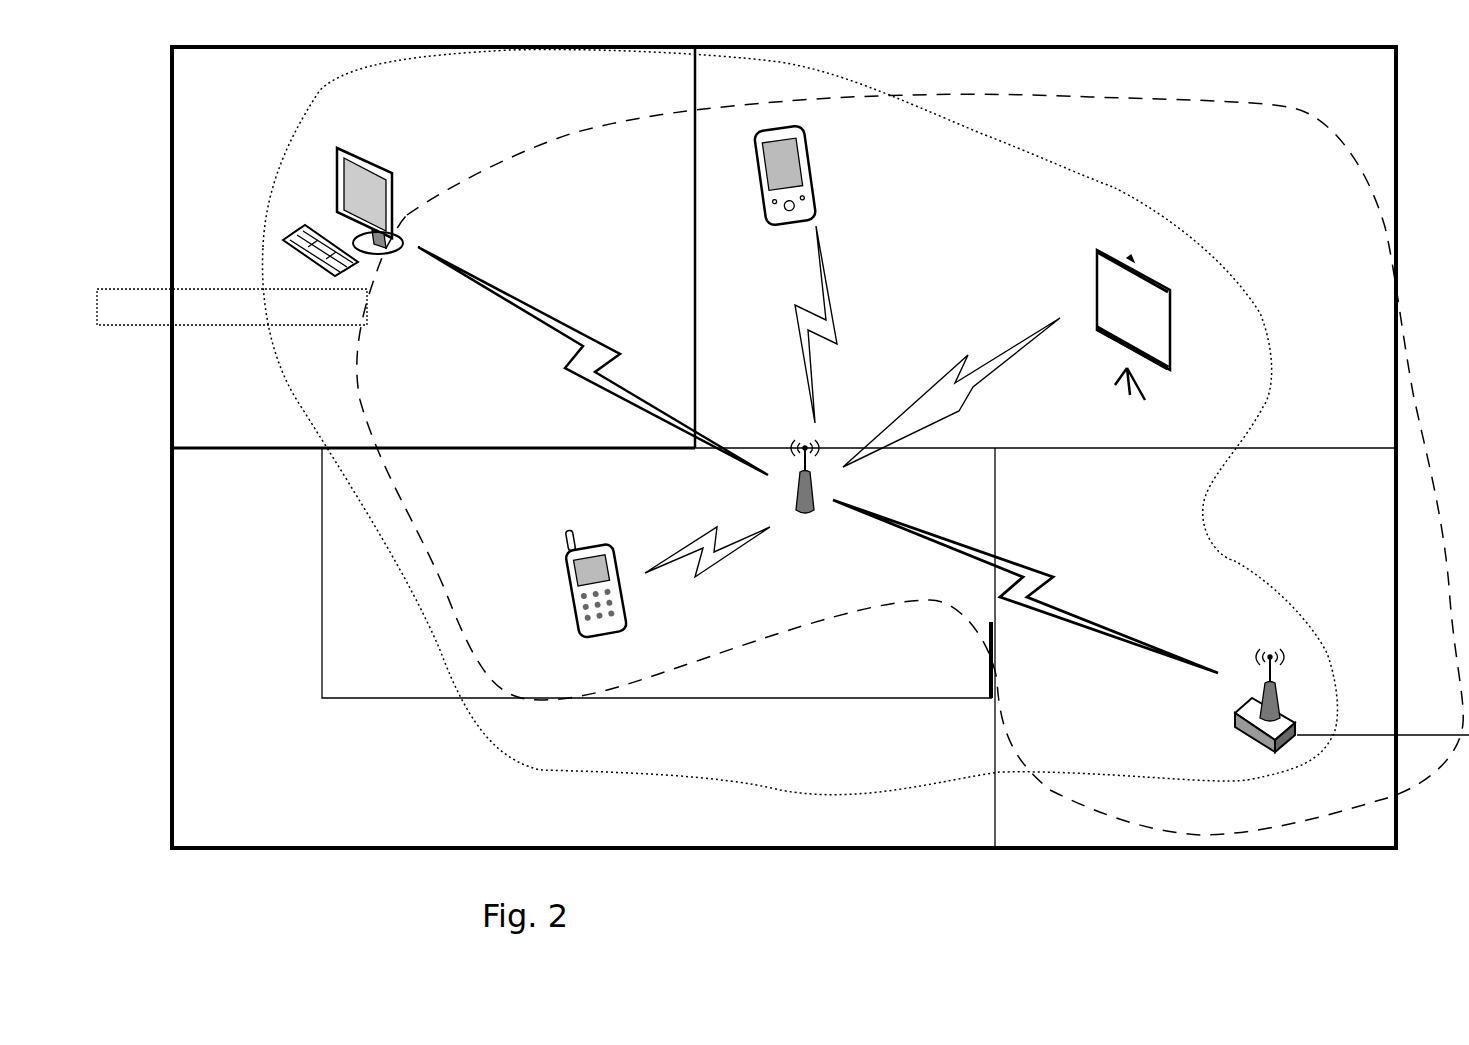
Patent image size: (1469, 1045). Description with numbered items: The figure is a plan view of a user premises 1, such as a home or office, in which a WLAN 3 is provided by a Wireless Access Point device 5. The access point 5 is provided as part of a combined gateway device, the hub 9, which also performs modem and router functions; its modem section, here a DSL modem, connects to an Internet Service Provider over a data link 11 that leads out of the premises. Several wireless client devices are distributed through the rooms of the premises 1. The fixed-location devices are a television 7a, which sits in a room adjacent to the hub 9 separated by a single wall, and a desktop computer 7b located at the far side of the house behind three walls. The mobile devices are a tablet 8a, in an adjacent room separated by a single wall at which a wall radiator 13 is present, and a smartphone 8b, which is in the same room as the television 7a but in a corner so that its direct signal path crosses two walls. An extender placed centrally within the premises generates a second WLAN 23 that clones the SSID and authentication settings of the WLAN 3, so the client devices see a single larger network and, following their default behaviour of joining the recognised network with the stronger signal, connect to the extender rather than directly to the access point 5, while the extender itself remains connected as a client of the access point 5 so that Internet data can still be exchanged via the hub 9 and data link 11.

The user premises 1 is at (1398, 137).
The WLAN 3 is at (1310, 112).
The Wireless Access Point device 5 is at (1282, 702).
The television 7a is at (1170, 290).
The desktop computer 7b is at (402, 210).
The tablet 8a is at (620, 543).
The smartphone 8b is at (813, 152).
The hub 9 is at (1243, 735).
The data link 11 is at (1418, 735).
The wall radiator 13 is at (988, 678).
The second WLAN 23 is at (262, 289).